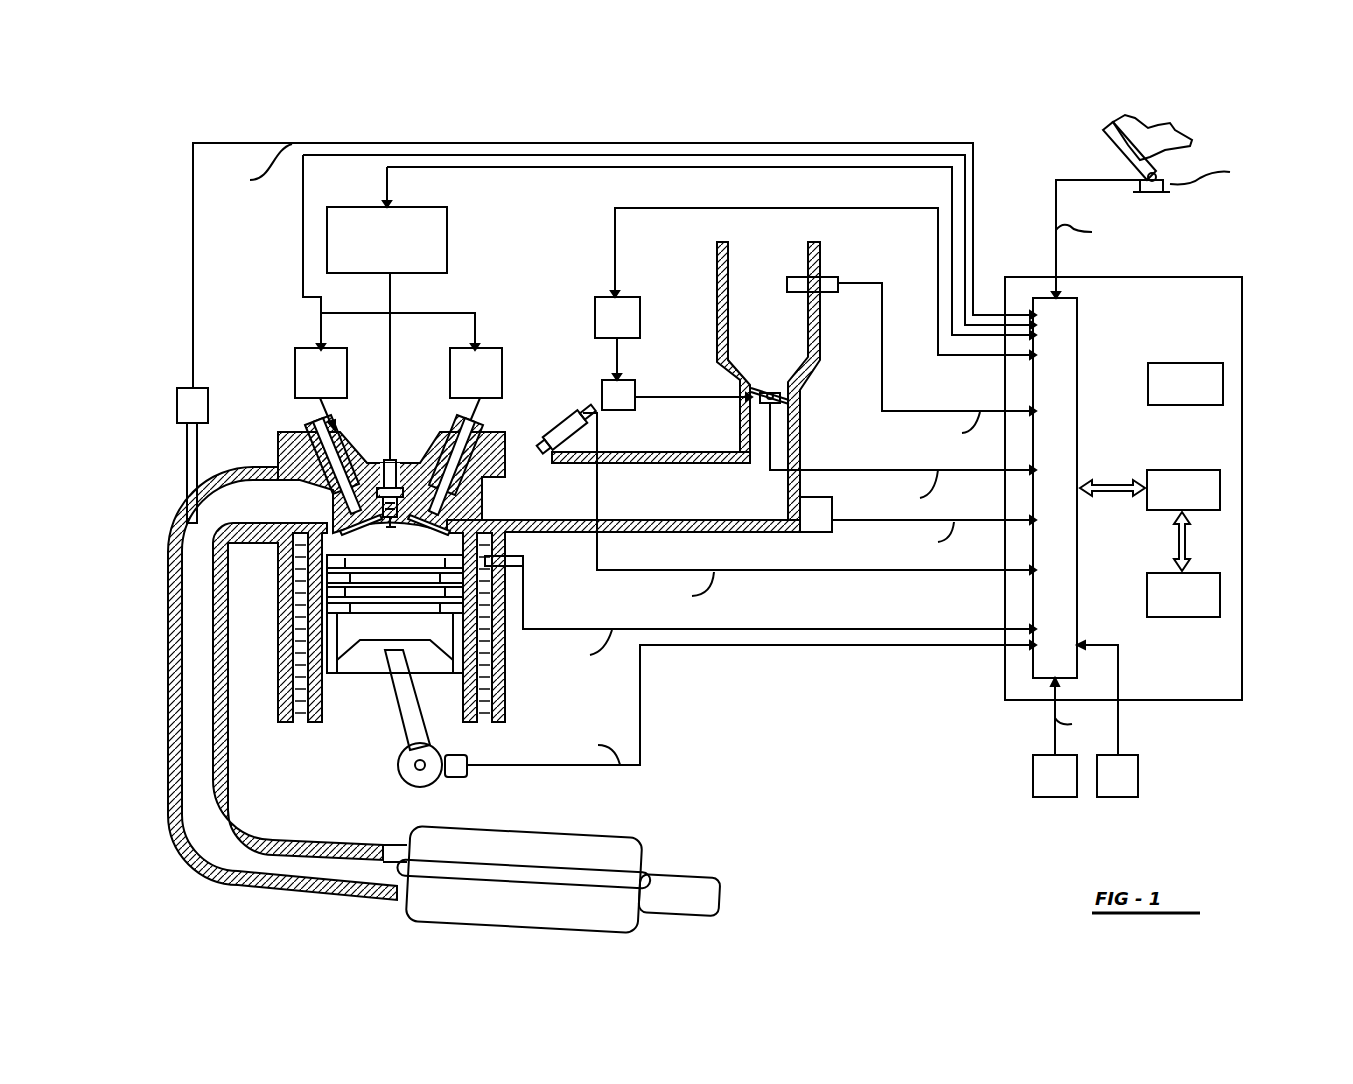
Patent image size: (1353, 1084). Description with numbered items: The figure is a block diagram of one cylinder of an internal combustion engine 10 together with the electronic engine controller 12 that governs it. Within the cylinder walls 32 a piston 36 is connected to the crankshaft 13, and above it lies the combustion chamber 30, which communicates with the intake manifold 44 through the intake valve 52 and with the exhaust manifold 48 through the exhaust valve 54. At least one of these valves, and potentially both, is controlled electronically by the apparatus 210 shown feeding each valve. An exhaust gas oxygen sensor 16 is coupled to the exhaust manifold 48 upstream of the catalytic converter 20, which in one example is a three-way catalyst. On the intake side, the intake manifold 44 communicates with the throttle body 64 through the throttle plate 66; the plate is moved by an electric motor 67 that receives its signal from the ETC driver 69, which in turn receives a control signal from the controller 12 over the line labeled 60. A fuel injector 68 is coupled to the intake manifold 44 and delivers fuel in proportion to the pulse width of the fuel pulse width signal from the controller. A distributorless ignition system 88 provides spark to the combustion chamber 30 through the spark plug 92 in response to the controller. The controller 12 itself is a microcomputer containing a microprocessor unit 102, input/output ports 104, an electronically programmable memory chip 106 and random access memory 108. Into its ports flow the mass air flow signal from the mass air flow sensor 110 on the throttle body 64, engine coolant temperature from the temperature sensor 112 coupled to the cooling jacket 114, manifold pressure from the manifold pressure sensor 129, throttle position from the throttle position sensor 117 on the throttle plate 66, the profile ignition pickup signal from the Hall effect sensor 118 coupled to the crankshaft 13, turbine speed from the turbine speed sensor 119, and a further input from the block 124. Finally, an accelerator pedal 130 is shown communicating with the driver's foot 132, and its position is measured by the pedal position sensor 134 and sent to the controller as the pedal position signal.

The internal combustion engine 10 is at (567, 586).
The electronic engine controller 12 is at (1151, 488).
The crankshaft 13 is at (398, 765).
The exhaust gas oxygen sensor 16 is at (180, 392).
The catalytic converter 20 is at (540, 832).
The combustion chamber 30 is at (394, 433).
The cylinder walls 32 is at (394, 691).
The piston 36 is at (387, 643).
The intake manifold 44 is at (732, 506).
The exhaust manifold 48 is at (175, 518).
The intake valve 52 is at (470, 505).
The exhaust valve 54 is at (325, 505).
The throttle actuator 60 is at (808, 208).
The throttle body 64 is at (845, 381).
The throttle plate 66 is at (762, 386).
The electric motor 67 is at (615, 382).
The fuel injector 68 is at (548, 410).
The ETC driver 69 is at (600, 318).
The distributorless ignition system 88 is at (447, 245).
The spark plug 92 is at (394, 445).
The microprocessor unit 102 is at (1165, 470).
The input/output ports 104 is at (1077, 322).
The electronic memory chip 106 is at (1185, 363).
The random access memory 108 is at (1150, 573).
The mass air flow sensor 110 is at (798, 277).
The temperature sensor 112 is at (520, 556).
The cooling jacket 114 is at (500, 684).
The throttle position sensor 117 is at (792, 383).
The Hall effect sensor 118 is at (457, 777).
The turbine speed sensor 119 is at (1033, 772).
The vehicle sensor 124 is at (1160, 770).
The MAP sensor 129 is at (822, 532).
The accelerator pedal 130 is at (1164, 193).
The driver's foot 132 is at (1195, 124).
The pedal position sensor 134 is at (1220, 172).
The apparatus 210 is at (300, 348).